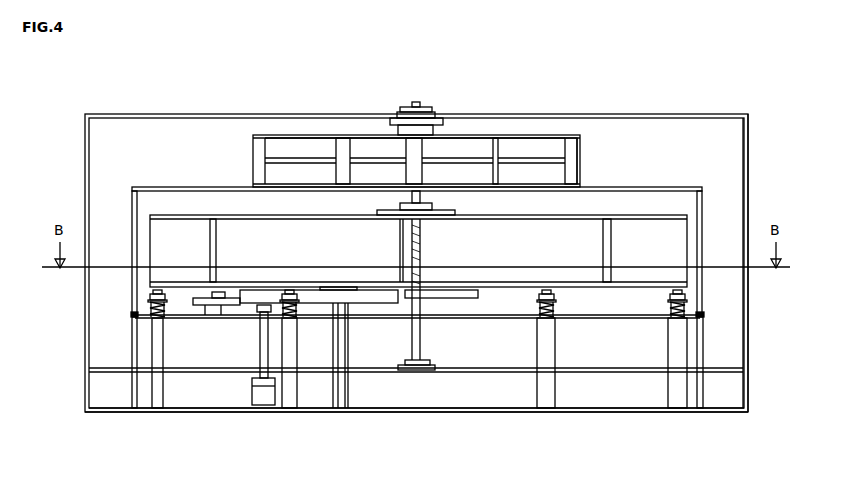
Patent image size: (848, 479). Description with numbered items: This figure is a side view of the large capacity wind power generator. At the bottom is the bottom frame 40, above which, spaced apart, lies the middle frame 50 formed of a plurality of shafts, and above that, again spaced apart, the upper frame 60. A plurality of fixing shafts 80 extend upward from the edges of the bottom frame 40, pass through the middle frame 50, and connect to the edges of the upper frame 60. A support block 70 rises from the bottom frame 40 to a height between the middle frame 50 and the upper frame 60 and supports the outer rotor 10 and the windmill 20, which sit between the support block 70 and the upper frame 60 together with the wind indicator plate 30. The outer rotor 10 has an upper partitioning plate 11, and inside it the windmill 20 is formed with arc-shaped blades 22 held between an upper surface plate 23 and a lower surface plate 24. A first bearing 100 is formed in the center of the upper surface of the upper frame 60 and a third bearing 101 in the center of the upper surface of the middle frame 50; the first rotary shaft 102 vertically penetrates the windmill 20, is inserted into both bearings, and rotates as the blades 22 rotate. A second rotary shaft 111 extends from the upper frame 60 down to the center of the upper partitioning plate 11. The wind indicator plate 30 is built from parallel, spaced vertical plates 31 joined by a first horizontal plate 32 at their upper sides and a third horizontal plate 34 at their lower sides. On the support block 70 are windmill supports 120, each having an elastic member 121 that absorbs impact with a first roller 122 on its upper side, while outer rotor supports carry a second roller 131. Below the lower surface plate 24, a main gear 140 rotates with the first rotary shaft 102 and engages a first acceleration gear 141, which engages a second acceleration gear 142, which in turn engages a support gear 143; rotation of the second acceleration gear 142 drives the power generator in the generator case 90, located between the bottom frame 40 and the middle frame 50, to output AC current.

The outer rotor 10 is at (130, 207).
The upper partitioning plate 11 is at (171, 187).
The windmill 20 is at (416, 198).
The blades 22 is at (471, 255).
The upper surface plate 23 is at (573, 215).
The lower surface plate 24 is at (577, 290).
The wind indicator plate 30 is at (442, 126).
The vertical plates 31 is at (577, 150).
The first horizontal plate 32 is at (532, 157).
The third horizontal plate 34 is at (450, 183).
The bottom frame 40 is at (467, 413).
The middle frame 50 is at (723, 370).
The upper frame 60 is at (678, 114).
The support block 70 is at (700, 403).
The fixing shafts 80 is at (748, 166).
The generator case 90 is at (252, 393).
The first bearing 100 is at (425, 102).
The third bearing 101 is at (433, 363).
The first rotary shaft 102 is at (420, 332).
The second rotary shaft 111 is at (415, 147).
The windmill supports 120 is at (147, 292).
The elastic member 121 is at (148, 308).
The first roller 122 is at (96, 256).
The second roller 131 is at (132, 315).
The main gear 140 is at (478, 290).
The first acceleration gear 141 is at (368, 303).
The second acceleration gear 142 is at (200, 306).
The support gear 143 is at (200, 310).